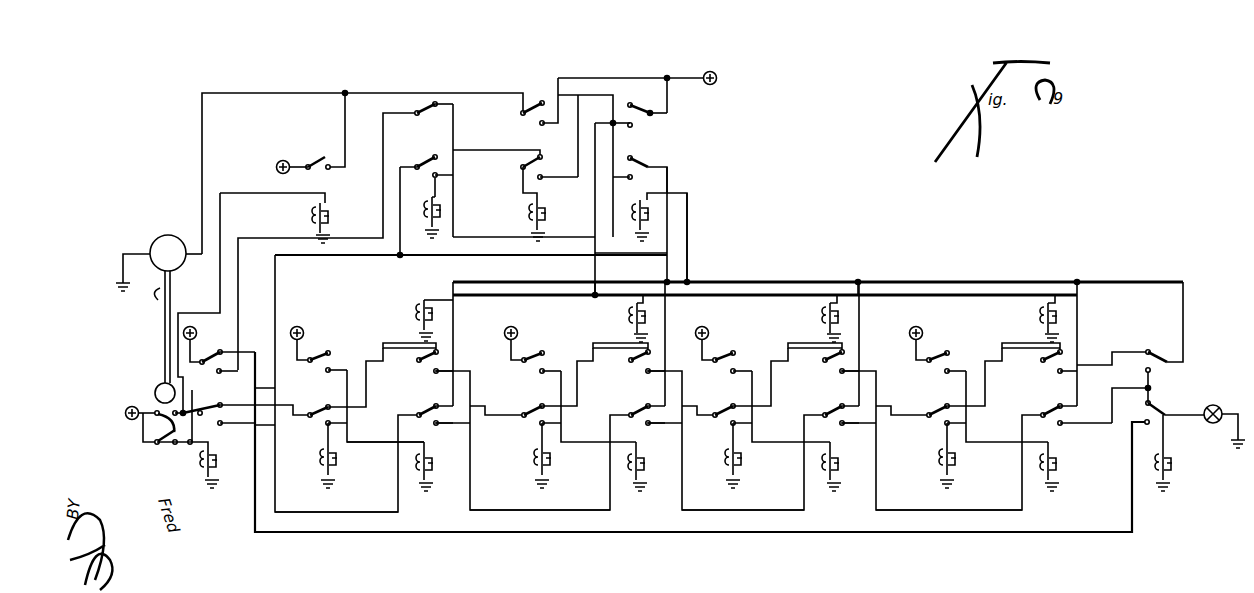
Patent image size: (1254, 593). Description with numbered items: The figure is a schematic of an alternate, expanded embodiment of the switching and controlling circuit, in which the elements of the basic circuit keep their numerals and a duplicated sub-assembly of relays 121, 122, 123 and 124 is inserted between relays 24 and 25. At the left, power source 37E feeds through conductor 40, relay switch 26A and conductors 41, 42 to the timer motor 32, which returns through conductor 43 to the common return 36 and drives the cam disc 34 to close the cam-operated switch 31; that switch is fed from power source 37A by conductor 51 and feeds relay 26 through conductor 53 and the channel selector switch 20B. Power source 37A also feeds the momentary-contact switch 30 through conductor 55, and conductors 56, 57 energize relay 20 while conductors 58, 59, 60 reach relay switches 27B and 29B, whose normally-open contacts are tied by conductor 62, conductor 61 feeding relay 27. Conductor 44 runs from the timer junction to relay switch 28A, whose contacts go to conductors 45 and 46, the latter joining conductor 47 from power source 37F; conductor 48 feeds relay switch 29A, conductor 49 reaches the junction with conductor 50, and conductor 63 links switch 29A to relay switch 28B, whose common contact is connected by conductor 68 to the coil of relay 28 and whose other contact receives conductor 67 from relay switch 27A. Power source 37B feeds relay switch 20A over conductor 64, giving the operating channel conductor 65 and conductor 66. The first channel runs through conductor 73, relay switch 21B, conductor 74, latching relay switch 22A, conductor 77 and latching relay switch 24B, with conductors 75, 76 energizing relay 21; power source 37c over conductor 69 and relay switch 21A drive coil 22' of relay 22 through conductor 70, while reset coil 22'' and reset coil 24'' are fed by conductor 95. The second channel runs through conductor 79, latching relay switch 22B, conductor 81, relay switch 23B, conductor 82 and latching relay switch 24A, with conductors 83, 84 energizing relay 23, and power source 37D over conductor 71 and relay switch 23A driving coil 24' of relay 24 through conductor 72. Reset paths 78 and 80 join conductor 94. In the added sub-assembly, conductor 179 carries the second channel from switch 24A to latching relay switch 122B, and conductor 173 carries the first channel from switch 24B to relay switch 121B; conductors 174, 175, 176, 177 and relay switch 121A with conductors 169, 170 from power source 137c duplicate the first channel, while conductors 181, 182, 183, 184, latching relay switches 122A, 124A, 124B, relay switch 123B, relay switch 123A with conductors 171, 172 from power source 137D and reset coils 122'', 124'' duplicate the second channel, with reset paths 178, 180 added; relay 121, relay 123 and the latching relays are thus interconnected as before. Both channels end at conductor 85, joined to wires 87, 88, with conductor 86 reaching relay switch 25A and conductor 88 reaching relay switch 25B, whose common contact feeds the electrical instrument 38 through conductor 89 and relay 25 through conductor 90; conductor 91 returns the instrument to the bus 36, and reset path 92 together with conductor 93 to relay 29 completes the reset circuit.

The relay 20 is at (238, 582).
The relay 21 is at (338, 582).
The magnetic latching relay 22 is at (422, 563).
The relay 23 is at (548, 582).
The magnetic latching relay 24 is at (639, 563).
The relay 25 is at (1181, 582).
The relay 26 is at (358, 218).
The relay 27 is at (443, 275).
The relay 28 is at (553, 275).
The relay 29 is at (650, 275).
The plunger-actuated momentary-contact switch 30 is at (155, 446).
The cam-operated switch 31 is at (143, 440).
The timer motor 32 is at (168, 235).
The cam disc 34 is at (162, 383).
The common return 36 is at (116, 286).
The power source 37A is at (128, 406).
The power source 37B is at (183, 333).
The power source 37c is at (299, 330).
The power source 37D is at (510, 326).
The power source 37E is at (278, 162).
The power source 37F is at (718, 78).
The electrical instrument 38 is at (1220, 404).
The conductor 40 is at (318, 158).
The conductor 41 is at (340, 112).
The conductor 42 is at (222, 93).
The conductor 43 is at (140, 254).
The conductor 44 is at (426, 93).
The conductor 45 is at (562, 78).
The conductor 46 is at (615, 92).
The conductor 47 is at (668, 76).
The conductor 48 is at (668, 94).
The conductor 49 is at (640, 128).
The conductor 50 is at (594, 196).
The conductor 51 is at (150, 405).
The conductor 53 is at (220, 190).
The conductor 55 is at (143, 413).
The conductor 56 is at (168, 448).
The conductor 57 is at (203, 470).
The conductor 58 is at (295, 262).
The conductor 59 is at (403, 254).
The conductor 60 is at (670, 173).
The conductor 61 is at (431, 198).
The conductor 62 is at (488, 237).
The conductor 63 is at (578, 137).
The conductor 64 is at (218, 350).
The conductor 65 is at (402, 532).
The conductor 66 is at (382, 115).
The conductor 67 is at (462, 135).
The conductor 68 is at (522, 186).
The conductor 69 is at (302, 342).
The conductor 70 is at (356, 444).
The conductor 71 is at (506, 338).
The conductor 72 is at (568, 442).
The conductor 73 is at (285, 402).
The conductor 74 is at (362, 372).
The conductor 75 is at (395, 343).
The conductor 76 is at (322, 446).
The conductor 77 is at (475, 376).
The reset path conductor 78 is at (690, 282).
The conductor 79 is at (342, 512).
The reset path conductor 80 is at (503, 282).
The conductor 81 is at (476, 420).
The conductor 82 is at (578, 358).
The conductor 83 is at (600, 393).
The conductor 84 is at (535, 436).
The conductor 85 is at (1078, 450).
The conductor 86 is at (1098, 360).
The wire 87 is at (1140, 387).
The wire 88 is at (1150, 390).
The conductor 89 is at (1174, 412).
The conductor 90 is at (1172, 455).
The conductor 91 is at (1238, 440).
The reset path conductor 92 is at (1185, 310).
The conductor 93 is at (690, 212).
The conductor 94 is at (1142, 282).
The conductor 95 is at (528, 297).
The channel selector relay switch 20A is at (218, 387).
The channel selector relay switch 20B is at (222, 428).
The relay switch 21A is at (333, 350).
The relay switch 21B is at (320, 418).
The latching relay switch 22A is at (430, 388).
The latching relay switch 22B is at (430, 405).
The relay coil 22' is at (439, 466).
The reset coil 22'' is at (415, 312).
The relay switch 23A is at (520, 364).
The relay switch 23B is at (525, 402).
The latching relay switch 24A is at (644, 364).
The latching relay switch 24B is at (644, 424).
The relay coil 24' is at (652, 466).
The reset coil 24'' is at (624, 318).
The relay switch 25A is at (1170, 362).
The relay switch 25B is at (1144, 424).
The relay switch 26A is at (333, 189).
The relay switch 27A is at (438, 133).
The relay switch 27B is at (478, 168).
The relay switch 28A is at (525, 130).
The relay switch 28B is at (573, 163).
The relay switch 29A is at (676, 130).
The relay switch 29B is at (628, 173).
The relay 121 is at (760, 582).
The magnetic latching relay 122 is at (834, 563).
The relay 123 is at (965, 582).
The magnetic latching relay 124 is at (1053, 563).
The relay switch 121A is at (728, 380).
The relay switch 121B is at (734, 428).
The latching relay switch 122A is at (838, 380).
The latching relay switch 122B is at (838, 400).
The reset coil 122'' is at (852, 363).
The relay switch 123A is at (945, 368).
The relay switch 123B is at (940, 426).
The latching relay switch 124A is at (1058, 365).
The latching relay switch 124B is at (1056, 412).
The reset coil 124'' is at (1025, 318).
The power source 137c is at (700, 328).
The power source 137D is at (914, 328).
The conductor 169 is at (710, 345).
The conductor 170 is at (762, 446).
The conductor 171 is at (920, 345).
The conductor 172 is at (990, 446).
The conductor 173 is at (702, 416).
The conductor 174 is at (772, 360).
The conductor 175 is at (815, 340).
The conductor 176 is at (750, 455).
The conductor 177 is at (880, 394).
The reset path conductor 178 is at (1080, 318).
The conductor 179 is at (666, 375).
The reset path conductor 180 is at (755, 282).
The conductor 181 is at (852, 424).
The conductor 182 is at (978, 360).
The conductor 183 is at (1040, 346).
The conductor 184 is at (935, 456).